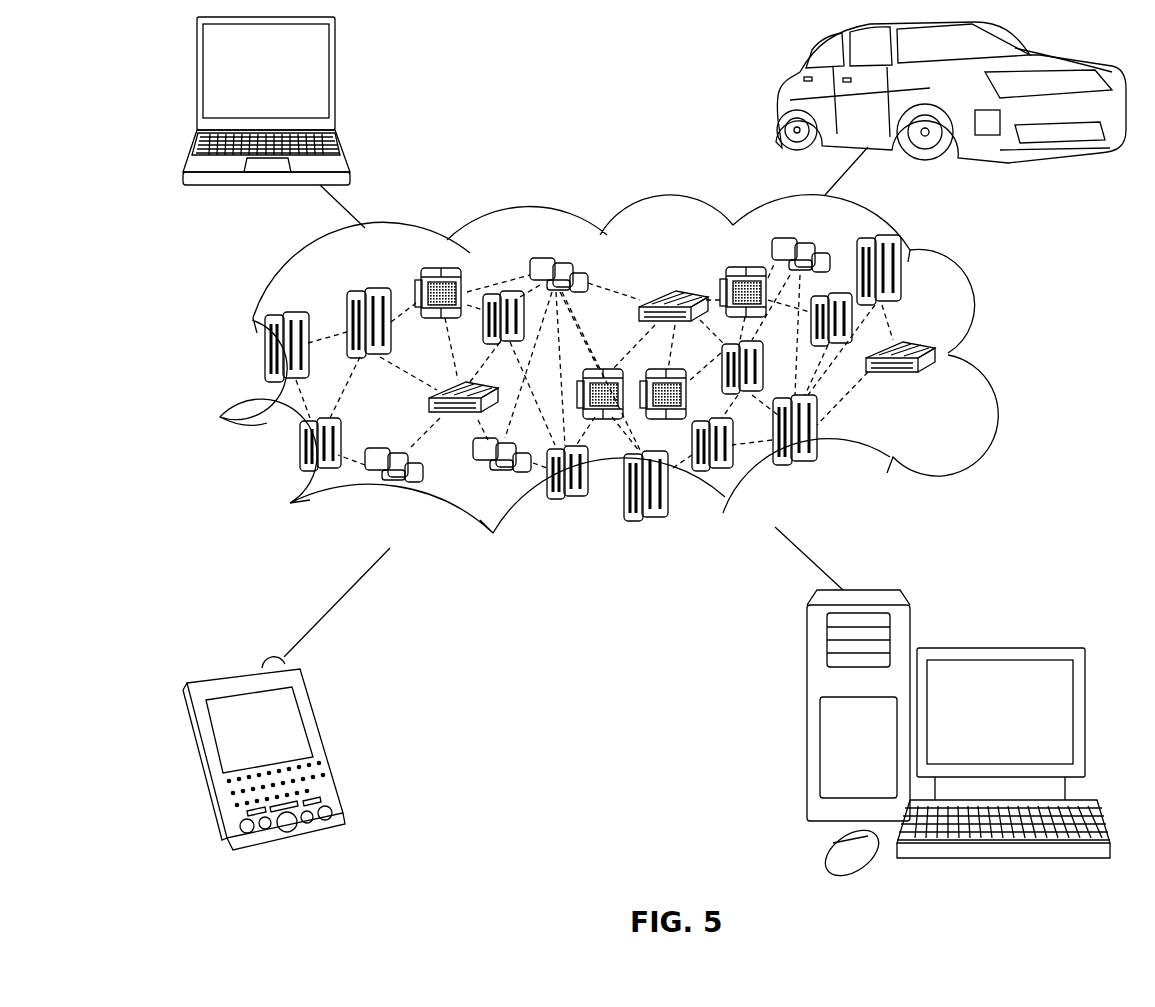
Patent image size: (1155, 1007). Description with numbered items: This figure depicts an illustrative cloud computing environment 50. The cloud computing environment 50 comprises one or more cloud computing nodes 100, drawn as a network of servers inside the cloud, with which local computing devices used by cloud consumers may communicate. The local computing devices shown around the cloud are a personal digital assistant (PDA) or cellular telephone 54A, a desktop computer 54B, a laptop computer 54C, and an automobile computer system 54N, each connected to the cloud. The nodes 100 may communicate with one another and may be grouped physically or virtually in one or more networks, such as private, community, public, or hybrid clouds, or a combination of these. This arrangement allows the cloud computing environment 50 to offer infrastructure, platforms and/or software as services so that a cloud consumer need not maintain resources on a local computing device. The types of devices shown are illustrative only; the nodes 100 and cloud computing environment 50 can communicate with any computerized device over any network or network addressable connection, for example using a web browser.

The cloud computing environment 50 is at (1003, 356).
The cloud computing nodes 100 is at (940, 385).
The personal digital assistant (PDA) or cellular telephone 54A is at (327, 741).
The desktop computer 54B is at (997, 647).
The laptop computer 54C is at (337, 82).
The automobile computer system 54N is at (773, 95).